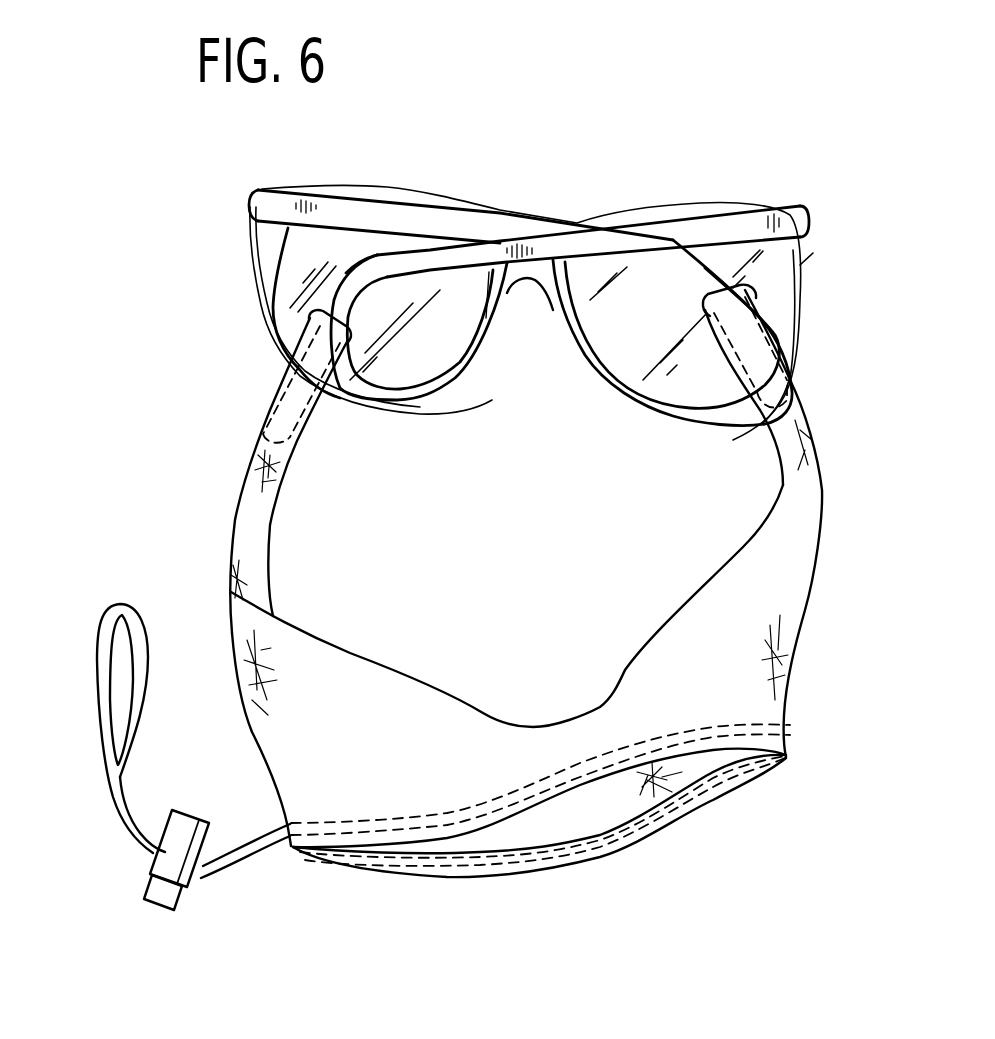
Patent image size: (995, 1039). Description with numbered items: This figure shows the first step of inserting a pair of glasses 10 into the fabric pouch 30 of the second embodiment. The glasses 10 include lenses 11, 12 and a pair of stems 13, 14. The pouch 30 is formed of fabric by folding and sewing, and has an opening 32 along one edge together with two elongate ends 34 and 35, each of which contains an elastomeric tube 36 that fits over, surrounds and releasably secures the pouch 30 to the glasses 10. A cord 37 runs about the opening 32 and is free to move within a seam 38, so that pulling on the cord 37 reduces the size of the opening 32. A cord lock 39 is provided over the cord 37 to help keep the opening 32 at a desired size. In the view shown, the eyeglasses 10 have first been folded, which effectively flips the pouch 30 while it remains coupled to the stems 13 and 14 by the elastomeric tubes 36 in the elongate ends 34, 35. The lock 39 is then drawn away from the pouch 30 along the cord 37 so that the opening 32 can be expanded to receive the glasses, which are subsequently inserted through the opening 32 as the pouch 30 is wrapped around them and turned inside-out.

The glasses 10 is at (515, 274).
The lens 11 is at (293, 258).
The lens 12 is at (762, 281).
The stem 13 is at (698, 265).
The stem 14 is at (330, 312).
The pouch 30 is at (403, 696).
The opening 32 is at (523, 827).
The elongate end 34 is at (803, 490).
The elongate end 35 is at (262, 492).
The elastomeric tube 36 is at (303, 380).
The cord 37 is at (108, 713).
The seam 38 is at (642, 737).
The cord lock 39 is at (167, 866).